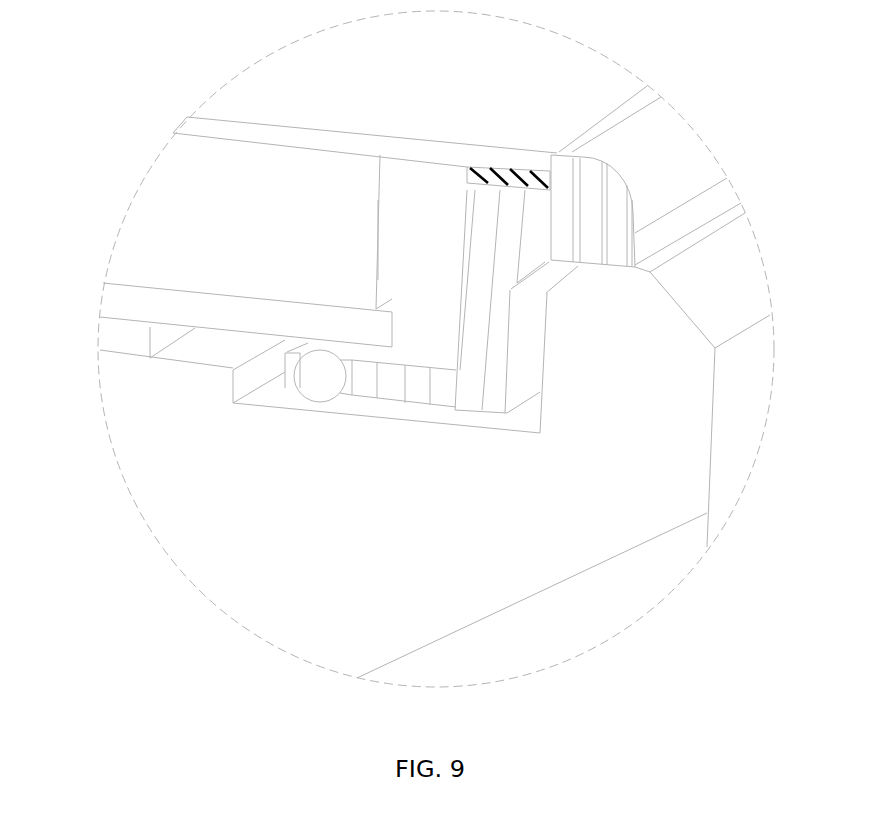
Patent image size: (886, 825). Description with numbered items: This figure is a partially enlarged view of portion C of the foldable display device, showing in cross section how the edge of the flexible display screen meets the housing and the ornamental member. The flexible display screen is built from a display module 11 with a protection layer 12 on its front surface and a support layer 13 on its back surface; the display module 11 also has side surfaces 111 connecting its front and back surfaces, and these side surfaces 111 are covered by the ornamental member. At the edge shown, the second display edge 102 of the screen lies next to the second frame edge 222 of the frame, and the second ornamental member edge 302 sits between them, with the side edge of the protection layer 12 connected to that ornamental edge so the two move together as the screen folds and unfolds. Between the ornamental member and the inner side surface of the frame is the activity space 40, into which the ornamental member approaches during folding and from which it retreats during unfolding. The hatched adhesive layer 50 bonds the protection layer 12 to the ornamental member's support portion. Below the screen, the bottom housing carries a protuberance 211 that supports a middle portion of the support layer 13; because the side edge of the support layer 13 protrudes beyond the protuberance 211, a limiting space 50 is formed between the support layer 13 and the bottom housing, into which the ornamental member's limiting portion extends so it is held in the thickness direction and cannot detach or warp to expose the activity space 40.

The display module 11 is at (167, 196).
The protection layer 12 is at (207, 128).
The support layer 13 is at (120, 306).
The side surfaces 111 is at (417, 240).
The protuberance 211 is at (233, 385).
The adhesive layer / limiting space 50 is at (265, 396).
The activity space 40 is at (538, 362).
The second ornamental member edge 302 is at (650, 163).
The second display edge 102 is at (607, 110).
The second frame edge 222 is at (692, 265).
The portion C is at (251, 633).